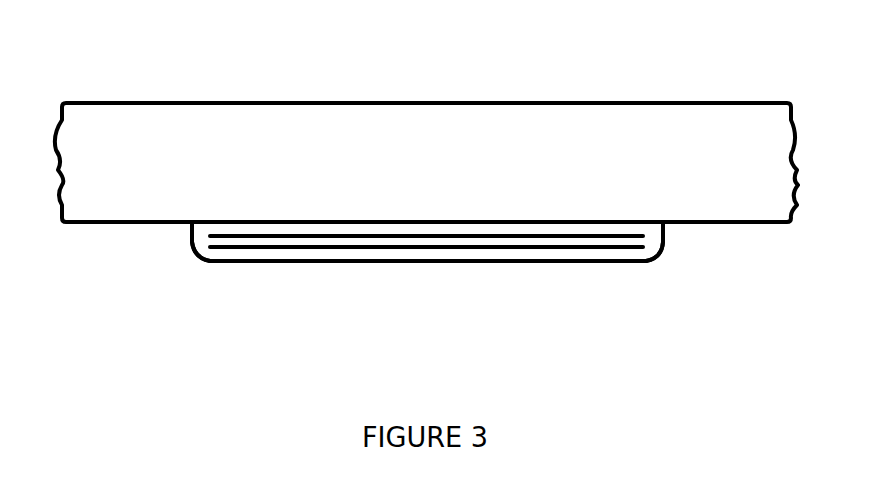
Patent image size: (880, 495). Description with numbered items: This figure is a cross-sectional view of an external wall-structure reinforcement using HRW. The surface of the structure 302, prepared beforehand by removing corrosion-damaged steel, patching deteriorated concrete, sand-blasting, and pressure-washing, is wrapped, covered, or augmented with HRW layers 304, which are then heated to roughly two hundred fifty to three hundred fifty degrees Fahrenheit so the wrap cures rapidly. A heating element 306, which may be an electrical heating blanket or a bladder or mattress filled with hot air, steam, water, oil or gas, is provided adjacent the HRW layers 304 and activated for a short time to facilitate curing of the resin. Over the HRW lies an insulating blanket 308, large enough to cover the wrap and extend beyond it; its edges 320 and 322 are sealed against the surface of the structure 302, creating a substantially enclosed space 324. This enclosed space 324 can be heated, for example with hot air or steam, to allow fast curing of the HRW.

The structure 302 is at (470, 122).
The HRW layers 304 is at (644, 237).
The heating element 306 is at (644, 248).
The insulating blanket 308 is at (197, 262).
The edge of insulating blanket 320 is at (190, 228).
The edge of insulating blanket 322 is at (667, 227).
The enclosed space 324 is at (528, 253).